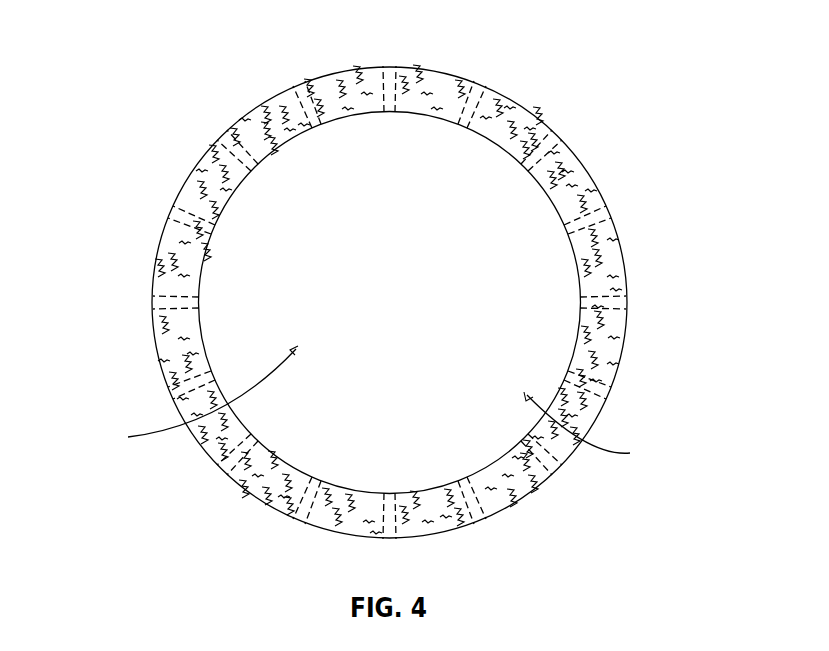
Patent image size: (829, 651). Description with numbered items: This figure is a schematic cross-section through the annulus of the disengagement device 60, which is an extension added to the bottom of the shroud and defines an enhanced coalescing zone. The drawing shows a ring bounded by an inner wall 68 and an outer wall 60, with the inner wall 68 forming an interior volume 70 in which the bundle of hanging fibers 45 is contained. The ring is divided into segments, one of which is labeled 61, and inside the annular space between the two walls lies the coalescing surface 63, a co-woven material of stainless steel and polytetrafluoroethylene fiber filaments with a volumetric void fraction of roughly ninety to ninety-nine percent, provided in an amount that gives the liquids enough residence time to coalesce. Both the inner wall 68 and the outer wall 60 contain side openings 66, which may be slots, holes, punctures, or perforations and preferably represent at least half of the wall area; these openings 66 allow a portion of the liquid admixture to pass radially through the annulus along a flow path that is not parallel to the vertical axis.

The bundle of hanging fibers 45 is at (197, 400).
The disengagement device 60 is at (323, 531).
The ring segment 61 is at (222, 135).
The coalescing surface 63 is at (346, 92).
The side openings 66 is at (153, 303).
The inner wall 68 is at (441, 127).
The interior volume 70 is at (591, 430).